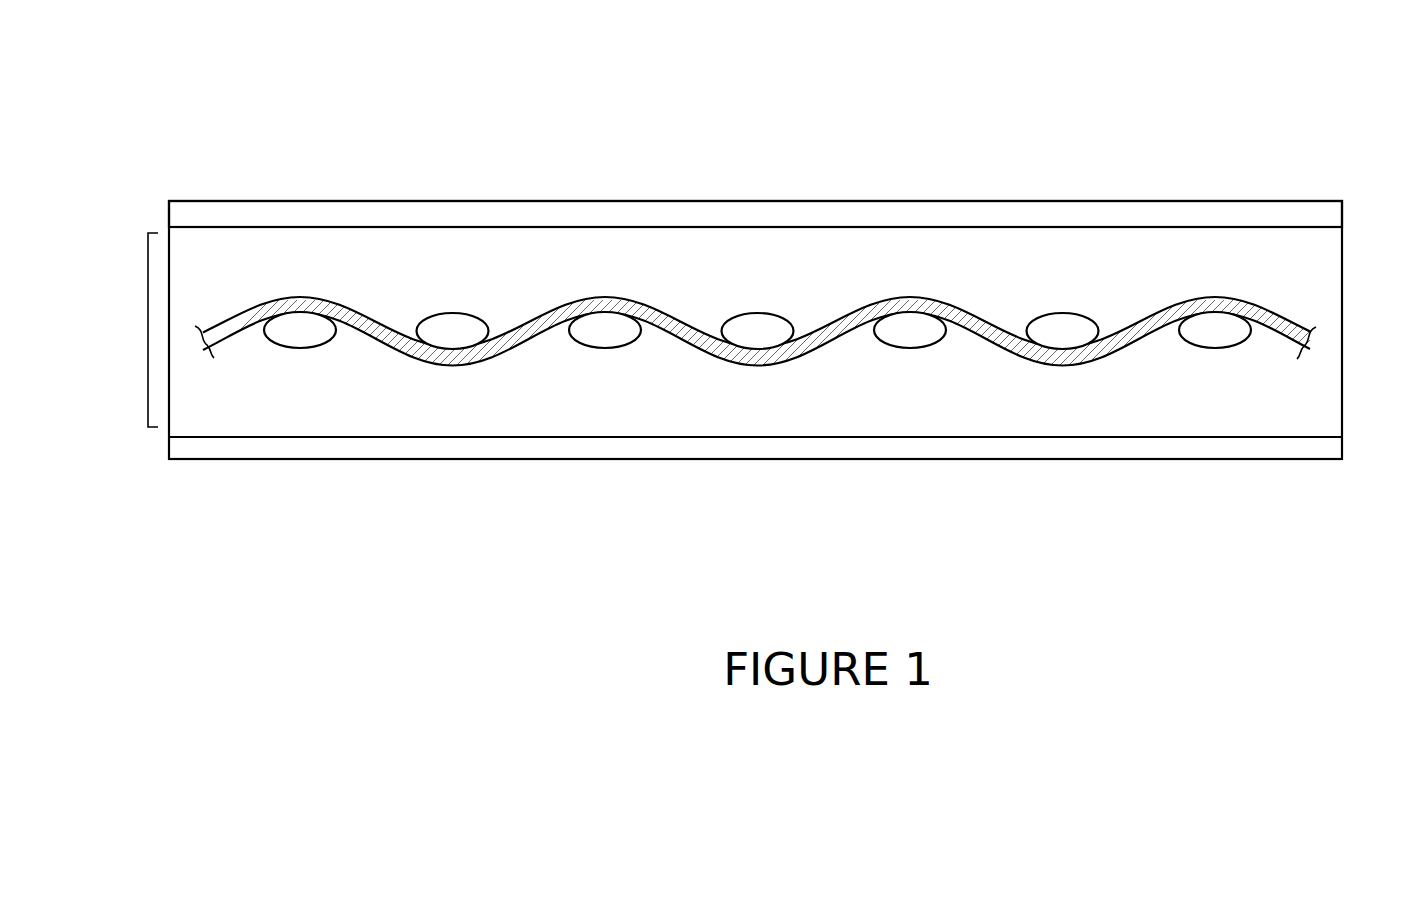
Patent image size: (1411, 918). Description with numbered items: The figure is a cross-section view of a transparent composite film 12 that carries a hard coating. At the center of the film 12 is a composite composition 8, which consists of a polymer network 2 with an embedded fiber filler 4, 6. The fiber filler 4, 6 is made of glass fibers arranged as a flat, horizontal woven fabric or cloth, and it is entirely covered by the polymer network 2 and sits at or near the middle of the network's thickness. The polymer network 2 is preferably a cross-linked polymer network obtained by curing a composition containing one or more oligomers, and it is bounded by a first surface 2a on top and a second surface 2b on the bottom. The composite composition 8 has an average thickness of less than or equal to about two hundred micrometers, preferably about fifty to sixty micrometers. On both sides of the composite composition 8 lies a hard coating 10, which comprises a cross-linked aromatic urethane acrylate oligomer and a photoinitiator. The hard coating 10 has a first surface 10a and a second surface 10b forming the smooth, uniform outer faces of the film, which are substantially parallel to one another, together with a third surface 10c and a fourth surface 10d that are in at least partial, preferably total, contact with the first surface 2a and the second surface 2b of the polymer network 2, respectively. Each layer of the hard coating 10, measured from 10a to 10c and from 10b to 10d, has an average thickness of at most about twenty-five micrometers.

The polymer network 2 is at (1313, 280).
The first surface 2a is at (683, 227).
The second surface 2b is at (690, 437).
The fiber filler 4 is at (238, 313).
The fiber filler 6 is at (310, 323).
The composite composition 8 is at (148, 325).
The hard coating 10 is at (1076, 213).
The first surface 10a is at (876, 200).
The second surface 10b is at (902, 460).
The third surface 10c is at (962, 227).
The fourth surface 10d is at (970, 437).
The transparent composite film 12 is at (737, 290).